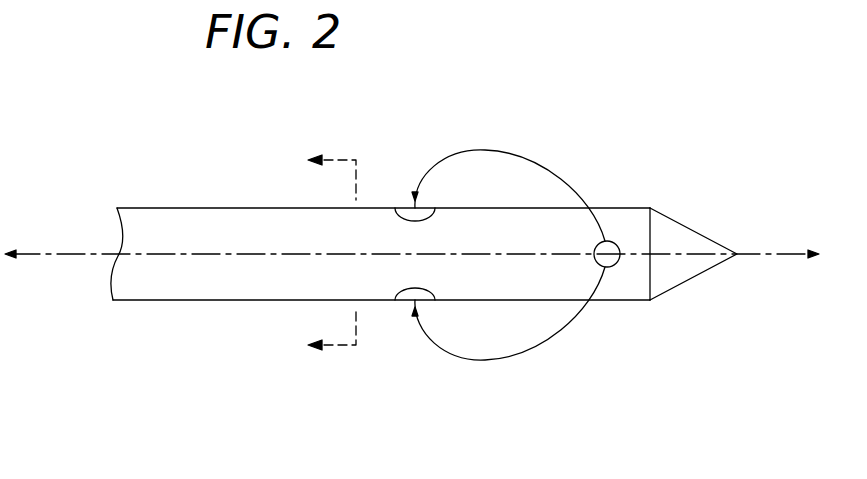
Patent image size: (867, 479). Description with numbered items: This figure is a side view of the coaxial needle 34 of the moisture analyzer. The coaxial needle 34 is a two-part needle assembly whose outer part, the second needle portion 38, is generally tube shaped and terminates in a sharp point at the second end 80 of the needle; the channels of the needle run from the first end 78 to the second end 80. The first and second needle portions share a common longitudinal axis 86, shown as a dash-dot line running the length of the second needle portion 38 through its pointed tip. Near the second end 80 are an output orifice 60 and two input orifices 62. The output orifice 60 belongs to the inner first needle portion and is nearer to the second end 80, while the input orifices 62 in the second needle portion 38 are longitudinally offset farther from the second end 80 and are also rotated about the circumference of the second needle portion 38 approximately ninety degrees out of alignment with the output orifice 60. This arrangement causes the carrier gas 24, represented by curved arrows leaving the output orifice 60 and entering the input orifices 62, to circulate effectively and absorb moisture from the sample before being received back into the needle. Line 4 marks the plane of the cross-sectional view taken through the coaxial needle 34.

The first end 78 is at (148, 129).
The second needle portion 38 is at (228, 208).
The input orifices 62 is at (404, 207).
The carrier gas 24 is at (503, 150).
The output orifice 60 is at (612, 266).
The second end 80 is at (714, 167).
The longitudinal axis 86 is at (778, 254).
The coaxial needle 34 is at (58, 412).
The line 4- 4 is at (320, 248).